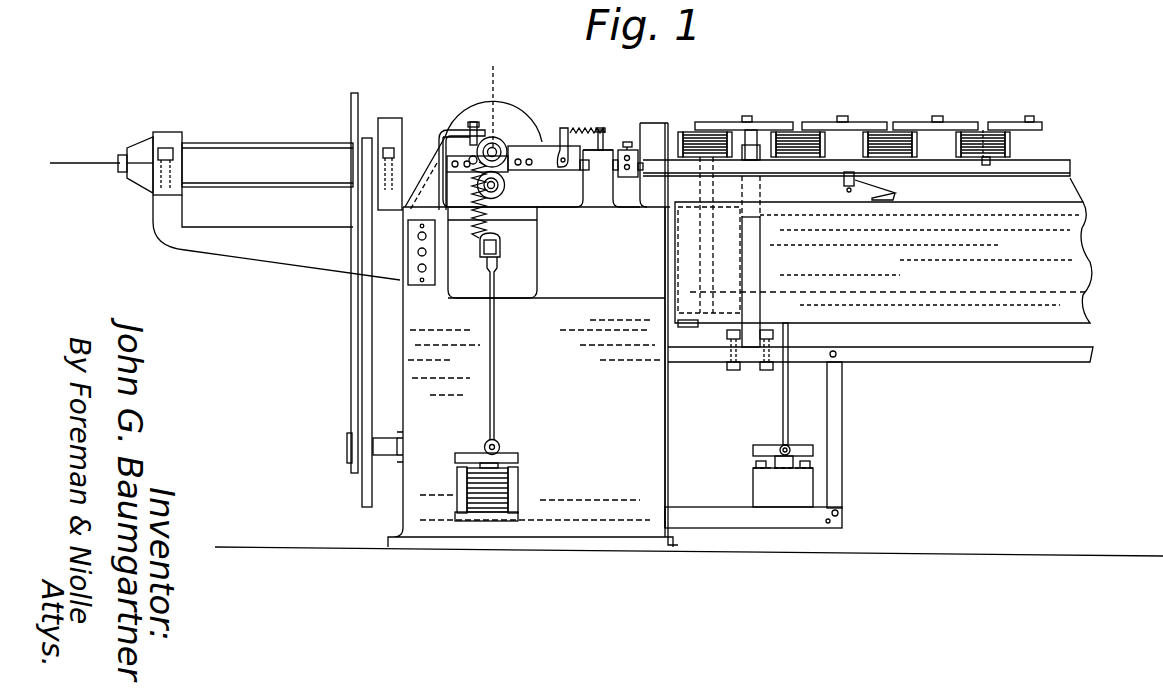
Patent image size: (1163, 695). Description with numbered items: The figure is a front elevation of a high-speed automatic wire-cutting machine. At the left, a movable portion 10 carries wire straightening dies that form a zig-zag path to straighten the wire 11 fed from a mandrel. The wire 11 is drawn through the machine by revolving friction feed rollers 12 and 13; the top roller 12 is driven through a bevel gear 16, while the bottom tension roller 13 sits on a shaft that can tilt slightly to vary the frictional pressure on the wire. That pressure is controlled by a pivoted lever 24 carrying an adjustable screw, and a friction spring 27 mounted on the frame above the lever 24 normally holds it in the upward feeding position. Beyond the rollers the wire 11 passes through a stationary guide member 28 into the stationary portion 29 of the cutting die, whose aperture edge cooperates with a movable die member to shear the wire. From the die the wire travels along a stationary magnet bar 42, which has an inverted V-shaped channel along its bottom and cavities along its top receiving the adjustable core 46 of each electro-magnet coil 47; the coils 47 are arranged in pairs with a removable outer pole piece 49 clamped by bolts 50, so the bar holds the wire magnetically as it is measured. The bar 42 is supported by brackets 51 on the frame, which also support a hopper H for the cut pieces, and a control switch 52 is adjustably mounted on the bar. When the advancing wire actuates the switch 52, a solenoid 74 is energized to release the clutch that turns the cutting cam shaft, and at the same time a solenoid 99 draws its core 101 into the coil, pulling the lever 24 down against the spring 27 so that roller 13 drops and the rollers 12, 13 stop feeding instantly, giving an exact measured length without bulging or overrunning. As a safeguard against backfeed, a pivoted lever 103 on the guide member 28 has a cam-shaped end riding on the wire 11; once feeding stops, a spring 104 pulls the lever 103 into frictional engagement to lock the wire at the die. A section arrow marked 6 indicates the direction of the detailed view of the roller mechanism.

The direction arrow / view line 6 is at (515, 71).
The movable portion 10 is at (228, 157).
The wire 11 is at (86, 162).
The top feed roller 12 is at (503, 147).
The bottom tension roller 13 is at (505, 186).
The bevel gear 16 is at (470, 108).
The pivoted lever 24 is at (495, 362).
The friction spring 27 is at (481, 206).
The stationary guide member 28 is at (543, 160).
The stationary portion of cutting die 29 is at (620, 143).
The stationary magnet bar 42 is at (1072, 170).
The core 46 is at (988, 148).
The electro-magnet coil 47 is at (1012, 146).
The removable outer pole piece 49 is at (770, 126).
The bolt 50 is at (750, 134).
The bracket 51 is at (753, 192).
The control switch 52 is at (901, 193).
The solenoid 74 is at (816, 485).
The solenoid 99 is at (522, 487).
The core 101 is at (500, 461).
The pivoted lever 103 is at (564, 150).
The spring 104 is at (595, 128).
The hopper H is at (1055, 284).